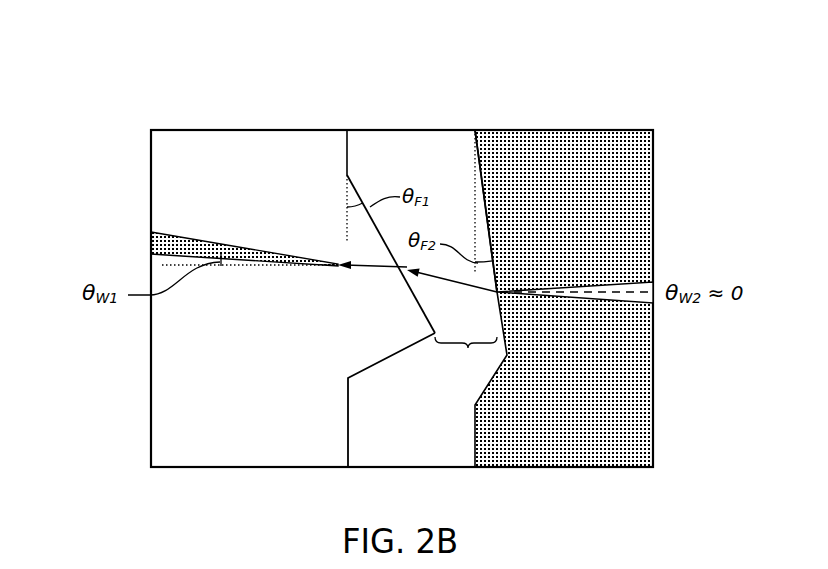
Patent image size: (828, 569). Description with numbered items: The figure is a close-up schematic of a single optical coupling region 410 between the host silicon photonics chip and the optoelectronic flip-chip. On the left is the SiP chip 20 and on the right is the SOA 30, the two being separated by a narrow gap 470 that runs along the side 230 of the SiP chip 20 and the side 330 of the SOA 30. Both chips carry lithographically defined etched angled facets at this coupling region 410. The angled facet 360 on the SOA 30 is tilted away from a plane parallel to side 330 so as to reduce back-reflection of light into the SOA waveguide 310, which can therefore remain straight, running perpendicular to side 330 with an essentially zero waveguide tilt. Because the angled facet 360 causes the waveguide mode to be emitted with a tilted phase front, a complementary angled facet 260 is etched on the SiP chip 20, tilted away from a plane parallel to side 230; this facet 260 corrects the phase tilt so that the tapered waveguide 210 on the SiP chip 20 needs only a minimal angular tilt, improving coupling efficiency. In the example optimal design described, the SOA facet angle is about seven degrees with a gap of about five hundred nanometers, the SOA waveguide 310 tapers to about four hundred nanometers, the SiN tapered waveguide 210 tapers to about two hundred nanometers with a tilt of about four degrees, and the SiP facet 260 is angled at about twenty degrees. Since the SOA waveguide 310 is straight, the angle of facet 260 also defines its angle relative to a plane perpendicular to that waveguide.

The optical coupling region 410 is at (126, 61).
The SiP chip 20 is at (263, 150).
The SOA 30 is at (545, 150).
The tapered waveguide 210 is at (160, 232).
The angled facet 260 is at (407, 290).
The side 230 is at (347, 445).
The side 330 is at (475, 447).
The gap 470 is at (466, 354).
The angled facet 360 is at (497, 283).
The SOA waveguide 310 is at (638, 282).